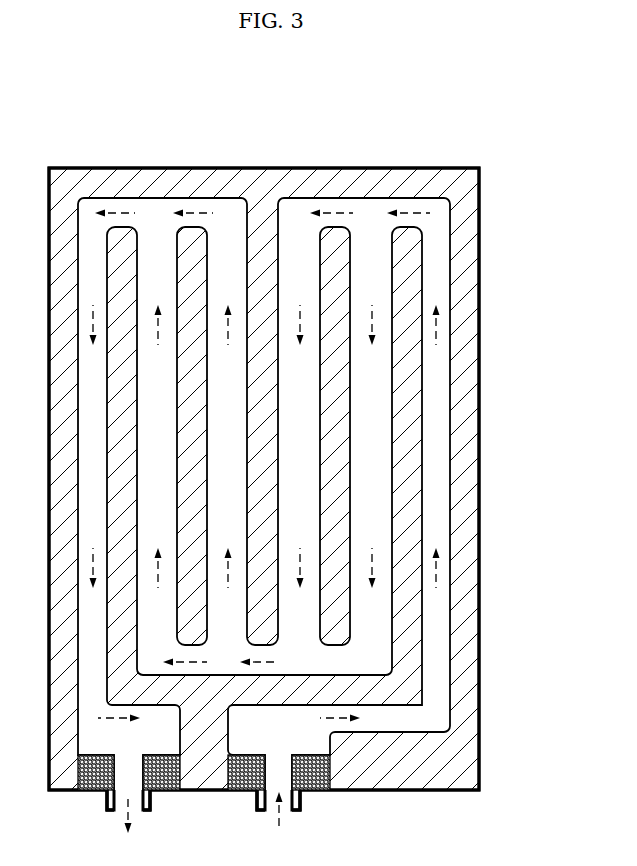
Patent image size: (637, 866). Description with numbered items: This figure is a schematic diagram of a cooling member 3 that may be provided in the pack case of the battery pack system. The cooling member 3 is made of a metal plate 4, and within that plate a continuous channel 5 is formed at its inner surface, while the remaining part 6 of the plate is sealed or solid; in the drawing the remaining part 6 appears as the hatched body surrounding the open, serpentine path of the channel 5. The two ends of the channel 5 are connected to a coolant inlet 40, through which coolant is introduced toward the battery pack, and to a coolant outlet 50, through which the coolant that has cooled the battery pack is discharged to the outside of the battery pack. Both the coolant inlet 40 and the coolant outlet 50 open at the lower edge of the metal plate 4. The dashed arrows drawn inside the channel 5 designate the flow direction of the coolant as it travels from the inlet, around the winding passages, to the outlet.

The cooling member 3 is at (423, 132).
The metal plate 4 is at (480, 405).
The channel 5 is at (162, 213).
The remaining part 6 is at (268, 181).
The coolant inlet 40 is at (302, 807).
The coolant outlet 50 is at (105, 808).